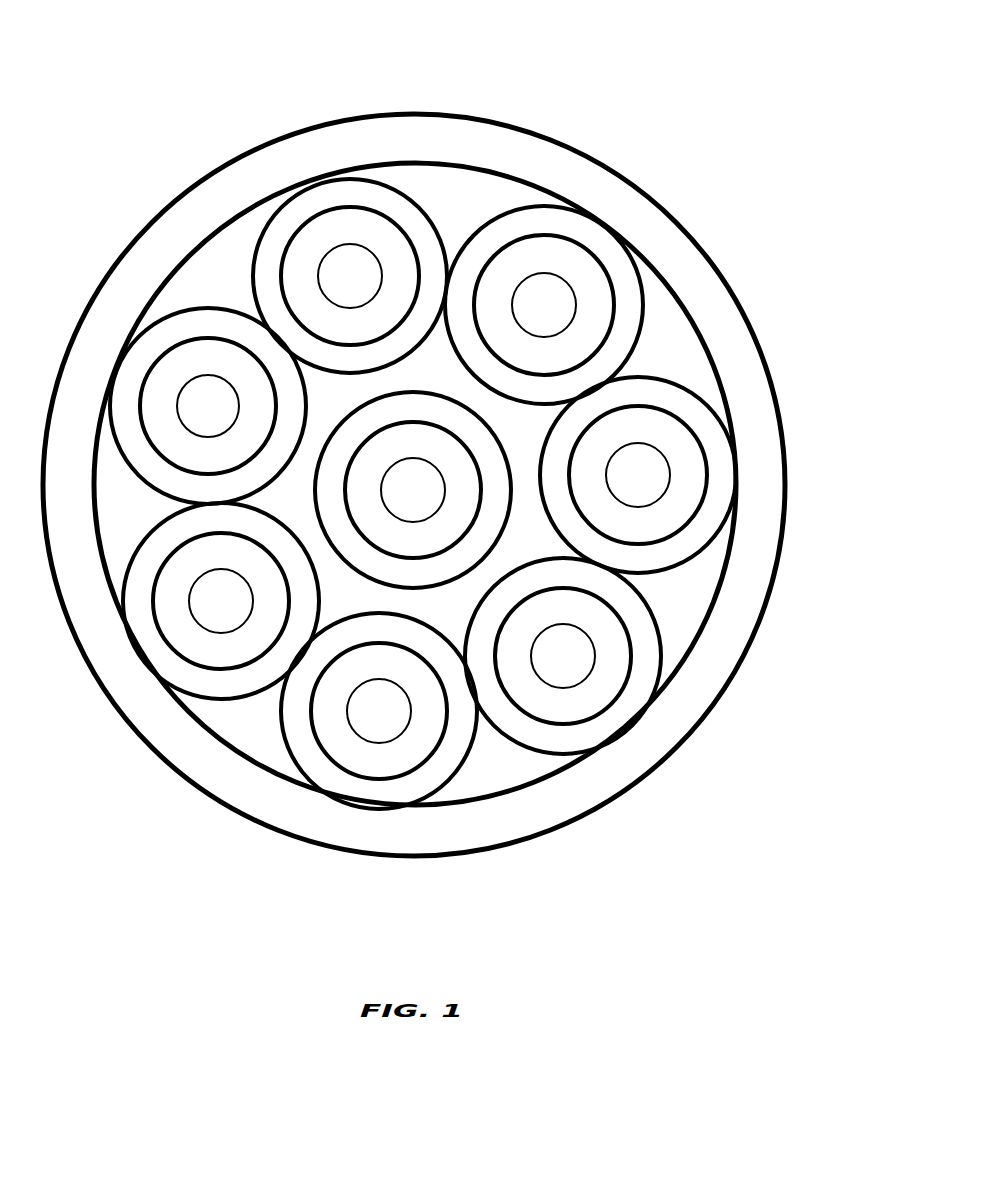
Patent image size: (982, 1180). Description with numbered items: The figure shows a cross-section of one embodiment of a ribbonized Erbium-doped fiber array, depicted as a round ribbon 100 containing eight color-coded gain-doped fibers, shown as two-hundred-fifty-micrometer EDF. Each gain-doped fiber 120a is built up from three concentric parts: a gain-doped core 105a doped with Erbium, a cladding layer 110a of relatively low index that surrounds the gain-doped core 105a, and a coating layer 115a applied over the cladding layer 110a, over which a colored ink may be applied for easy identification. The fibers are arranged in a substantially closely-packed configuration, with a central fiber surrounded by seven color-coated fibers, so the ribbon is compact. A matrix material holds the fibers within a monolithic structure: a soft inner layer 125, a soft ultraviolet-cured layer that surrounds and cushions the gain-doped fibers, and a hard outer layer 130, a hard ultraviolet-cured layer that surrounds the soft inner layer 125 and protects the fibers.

The ribbon 100 is at (432, 466).
The gain-doped core 105a is at (547, 292).
The cladding layer 110a is at (588, 282).
The coating layer 115a is at (628, 307).
The gain-doped fiber 120a is at (556, 736).
The soft inner layer 125 is at (683, 595).
The hard outer layer 130 is at (163, 719).